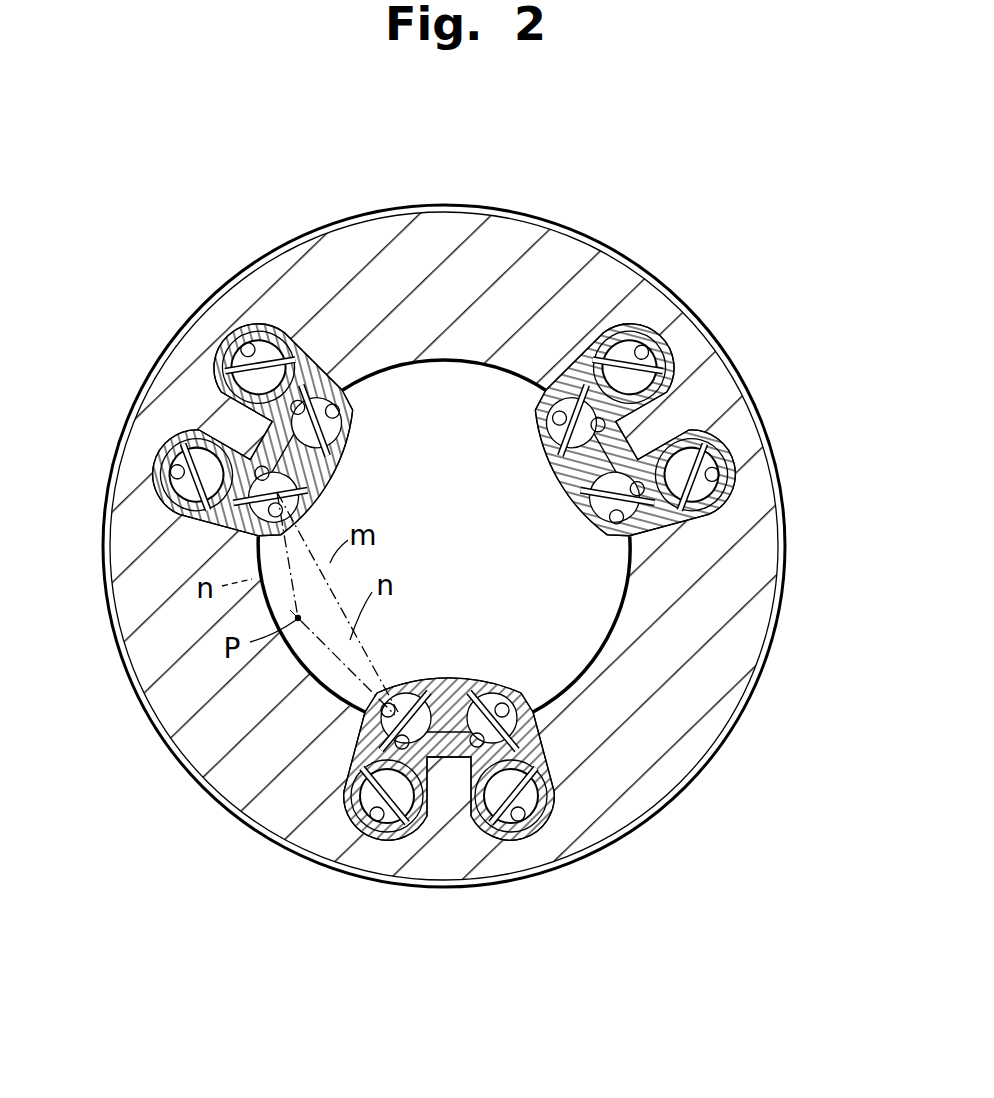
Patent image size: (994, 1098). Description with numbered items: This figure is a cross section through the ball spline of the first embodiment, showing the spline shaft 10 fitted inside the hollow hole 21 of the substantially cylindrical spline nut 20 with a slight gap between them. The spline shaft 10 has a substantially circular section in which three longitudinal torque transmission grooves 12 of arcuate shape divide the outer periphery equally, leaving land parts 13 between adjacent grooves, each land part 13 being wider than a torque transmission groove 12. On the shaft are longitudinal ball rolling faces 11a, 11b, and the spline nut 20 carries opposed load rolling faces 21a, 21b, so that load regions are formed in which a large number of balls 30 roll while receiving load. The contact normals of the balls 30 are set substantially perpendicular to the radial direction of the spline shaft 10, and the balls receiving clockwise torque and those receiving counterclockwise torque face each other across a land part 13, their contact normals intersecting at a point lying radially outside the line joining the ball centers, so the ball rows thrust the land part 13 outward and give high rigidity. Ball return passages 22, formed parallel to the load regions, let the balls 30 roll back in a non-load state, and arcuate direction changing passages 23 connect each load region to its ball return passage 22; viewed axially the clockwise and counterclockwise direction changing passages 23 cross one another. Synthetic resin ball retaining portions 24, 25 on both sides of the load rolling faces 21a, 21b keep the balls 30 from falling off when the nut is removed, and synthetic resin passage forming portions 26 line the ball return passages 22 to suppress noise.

The spline shaft 10 is at (439, 560).
The ball rolling face 11a is at (560, 427).
The ball rolling face 11b is at (347, 423).
The torque transmission groove 12 is at (338, 470).
The land part 13 is at (454, 362).
The spline nut 20 is at (585, 197).
The hollow hole 21 is at (603, 620).
The load rolling face 21a is at (230, 430).
The load rolling face 21b is at (232, 415).
The ball return passage 22 is at (240, 328).
The direction changing passage 23 is at (220, 412).
The ball retaining portion 24 is at (340, 460).
The ball retaining portion 25 is at (343, 385).
The passage forming portion 26 is at (263, 320).
The ball 30 is at (318, 358).